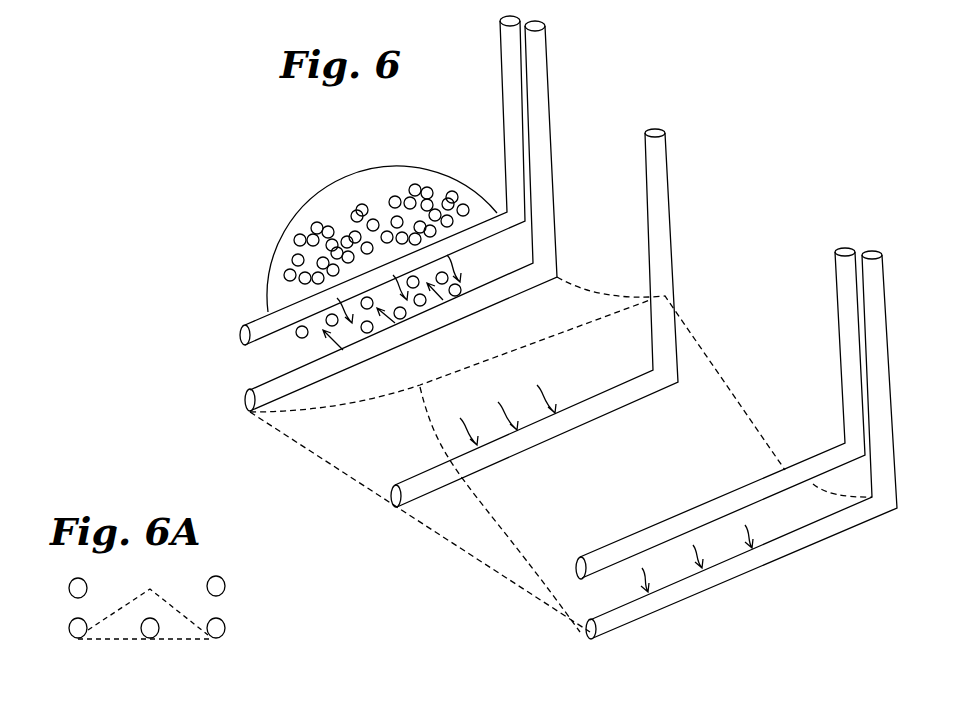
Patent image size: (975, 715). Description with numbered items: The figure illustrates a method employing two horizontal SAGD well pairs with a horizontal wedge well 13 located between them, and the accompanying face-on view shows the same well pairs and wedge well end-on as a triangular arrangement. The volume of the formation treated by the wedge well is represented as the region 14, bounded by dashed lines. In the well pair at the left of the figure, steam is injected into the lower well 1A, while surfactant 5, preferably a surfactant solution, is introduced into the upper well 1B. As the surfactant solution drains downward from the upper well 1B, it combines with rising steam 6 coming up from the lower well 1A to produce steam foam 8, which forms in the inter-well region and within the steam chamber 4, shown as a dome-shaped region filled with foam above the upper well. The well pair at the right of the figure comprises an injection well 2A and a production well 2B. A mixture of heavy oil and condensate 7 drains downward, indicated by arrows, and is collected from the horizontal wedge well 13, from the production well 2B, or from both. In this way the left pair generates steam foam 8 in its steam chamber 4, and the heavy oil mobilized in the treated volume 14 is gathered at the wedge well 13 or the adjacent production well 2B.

In FIG. 6, the lower well 1A is at (549, 58).
In FIG. 6A, the lower well 1A is at (69, 632).
In FIG. 6, the upper well 1B is at (500, 35).
In FIG. 6A, the upper well 1B is at (69, 590).
In FIG. 6, the injection well 2A is at (836, 275).
In FIG. 6A, the injection well 2A is at (225, 590).
In FIG. 6, the production well 2B is at (886, 298).
In FIG. 6A, the production well 2B is at (225, 632).
In FIG. 6, the horizontal wedge well 13 is at (668, 168).
In FIG. 6A, the horizontal wedge well 13 is at (150, 638).
In FIG. 6, the steam chamber 4 is at (283, 222).
In FIG. 6, the surfactant 5 is at (408, 289).
In FIG. 6, the rising steam 6 is at (377, 322).
In FIG. 6, the mixture of heavy oil and condensate 7 is at (621, 486).
In FIG. 6, the steam foam 8 is at (376, 261).
In FIG. 6, the volume of the formation treated by the wedge well 14 is at (314, 442).